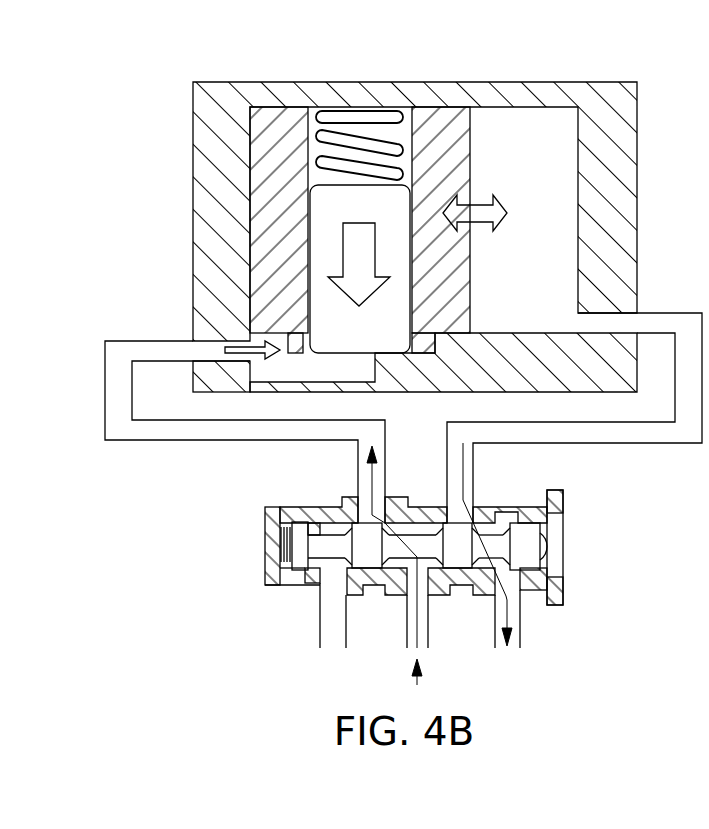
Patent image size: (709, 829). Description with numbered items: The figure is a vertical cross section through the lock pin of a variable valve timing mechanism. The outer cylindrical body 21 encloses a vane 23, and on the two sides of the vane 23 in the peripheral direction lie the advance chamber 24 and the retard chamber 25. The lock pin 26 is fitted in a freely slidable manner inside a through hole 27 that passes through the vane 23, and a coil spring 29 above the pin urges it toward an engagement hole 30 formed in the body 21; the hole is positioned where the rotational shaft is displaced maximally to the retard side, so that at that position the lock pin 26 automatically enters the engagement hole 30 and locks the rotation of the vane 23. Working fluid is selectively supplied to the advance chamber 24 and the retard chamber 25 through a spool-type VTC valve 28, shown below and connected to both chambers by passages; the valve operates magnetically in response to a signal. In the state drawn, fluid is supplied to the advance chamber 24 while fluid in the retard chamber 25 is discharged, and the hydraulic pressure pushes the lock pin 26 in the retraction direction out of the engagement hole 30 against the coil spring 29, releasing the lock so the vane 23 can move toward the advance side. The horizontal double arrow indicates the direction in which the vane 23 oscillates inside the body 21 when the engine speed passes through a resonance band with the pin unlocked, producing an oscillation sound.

The body 21 is at (543, 88).
The vane 23 is at (433, 123).
The advance chamber 24 is at (293, 375).
The retard chamber 25 is at (539, 189).
The lock pin 26 is at (328, 203).
The through hole 27 is at (404, 145).
The VTC valve 28 is at (265, 548).
The coil spring 29 is at (353, 117).
The engagement hole 30 is at (398, 353).